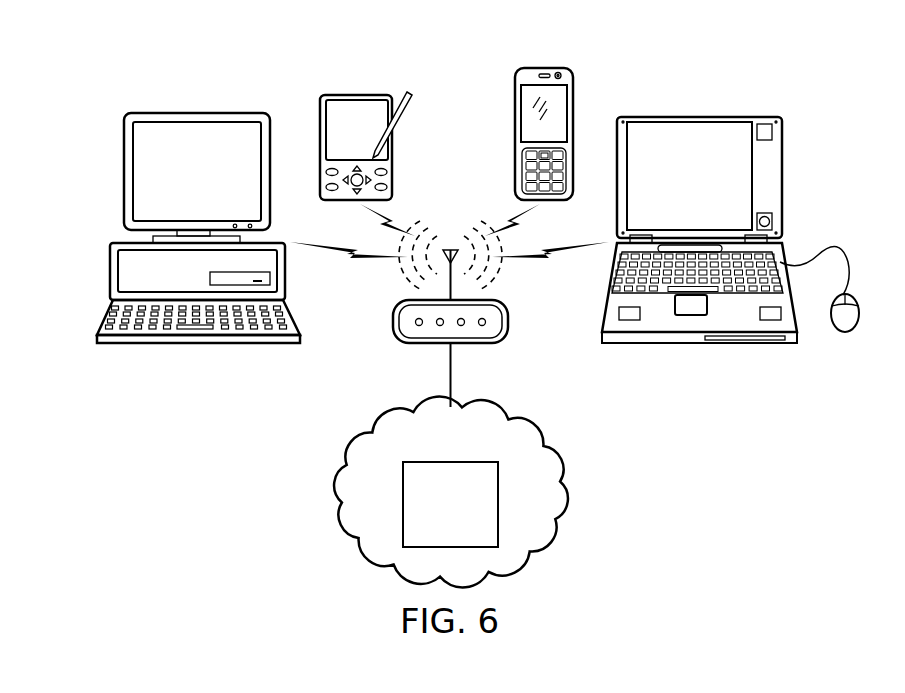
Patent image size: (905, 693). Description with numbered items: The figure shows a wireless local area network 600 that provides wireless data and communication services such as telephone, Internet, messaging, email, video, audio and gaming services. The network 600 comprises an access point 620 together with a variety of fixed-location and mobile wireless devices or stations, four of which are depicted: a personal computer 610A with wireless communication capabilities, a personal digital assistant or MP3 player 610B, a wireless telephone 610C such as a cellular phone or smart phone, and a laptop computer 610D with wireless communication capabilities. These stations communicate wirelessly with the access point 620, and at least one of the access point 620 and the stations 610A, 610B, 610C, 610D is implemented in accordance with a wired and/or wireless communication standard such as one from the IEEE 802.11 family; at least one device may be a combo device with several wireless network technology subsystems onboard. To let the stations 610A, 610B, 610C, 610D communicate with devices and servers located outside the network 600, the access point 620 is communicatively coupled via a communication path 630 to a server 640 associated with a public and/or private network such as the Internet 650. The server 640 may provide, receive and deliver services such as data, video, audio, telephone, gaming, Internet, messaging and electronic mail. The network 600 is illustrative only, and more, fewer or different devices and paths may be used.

The wireless local area network 600 is at (96, 70).
The personal computer 610A is at (195, 113).
The personal digital assistant or MP3 player 610B is at (355, 95).
The wireless telephone 610C is at (543, 68).
The laptop computer 610D is at (697, 116).
The access point 620 is at (393, 321).
The communication paths 630 is at (450, 374).
The server 640 is at (470, 536).
The Internet 650 is at (337, 490).